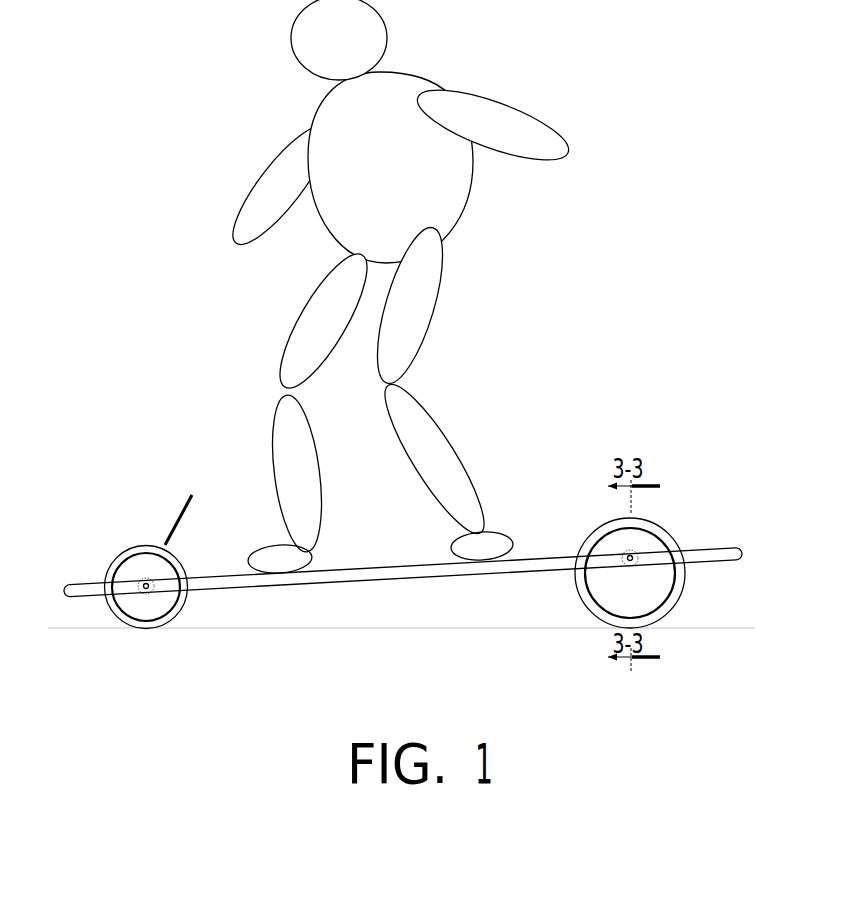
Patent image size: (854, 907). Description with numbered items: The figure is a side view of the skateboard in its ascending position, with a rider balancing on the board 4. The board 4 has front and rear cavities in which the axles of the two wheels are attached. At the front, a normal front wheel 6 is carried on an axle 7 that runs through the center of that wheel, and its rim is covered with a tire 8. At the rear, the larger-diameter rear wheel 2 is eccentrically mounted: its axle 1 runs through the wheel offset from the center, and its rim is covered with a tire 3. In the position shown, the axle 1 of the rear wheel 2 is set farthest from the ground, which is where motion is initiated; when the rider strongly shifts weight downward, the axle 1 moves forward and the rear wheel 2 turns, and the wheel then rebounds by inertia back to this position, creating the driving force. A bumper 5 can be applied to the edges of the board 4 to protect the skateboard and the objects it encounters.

The axle 1 is at (631, 558).
The rear wheel 2 is at (643, 582).
The tire 3 is at (597, 528).
The board 4 is at (607, 565).
The bumper 5 is at (522, 565).
The front wheel 6 is at (147, 563).
The axle 7 is at (146, 587).
The tire 8 is at (184, 508).